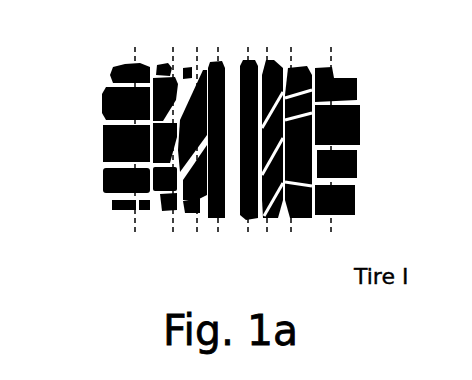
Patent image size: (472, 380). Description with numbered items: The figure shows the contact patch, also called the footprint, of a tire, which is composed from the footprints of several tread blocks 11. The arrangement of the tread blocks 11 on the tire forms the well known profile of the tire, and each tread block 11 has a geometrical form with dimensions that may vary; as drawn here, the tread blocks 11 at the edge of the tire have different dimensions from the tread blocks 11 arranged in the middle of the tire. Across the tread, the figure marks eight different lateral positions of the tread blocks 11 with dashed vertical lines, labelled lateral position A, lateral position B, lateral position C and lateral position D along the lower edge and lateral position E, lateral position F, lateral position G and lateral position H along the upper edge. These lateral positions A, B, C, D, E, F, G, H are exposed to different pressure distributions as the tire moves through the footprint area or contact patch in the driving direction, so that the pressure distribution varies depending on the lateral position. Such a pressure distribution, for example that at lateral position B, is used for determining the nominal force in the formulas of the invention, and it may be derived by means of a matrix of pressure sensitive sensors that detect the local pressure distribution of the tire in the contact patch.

The tread block 11 is at (106, 189).
The lateral position A is at (126, 161).
The lateral position B is at (171, 161).
The lateral position C is at (189, 161).
The lateral position D is at (208, 161).
The lateral position E is at (245, 126).
The lateral position F is at (261, 126).
The lateral position G is at (287, 126).
The lateral position H is at (330, 126).